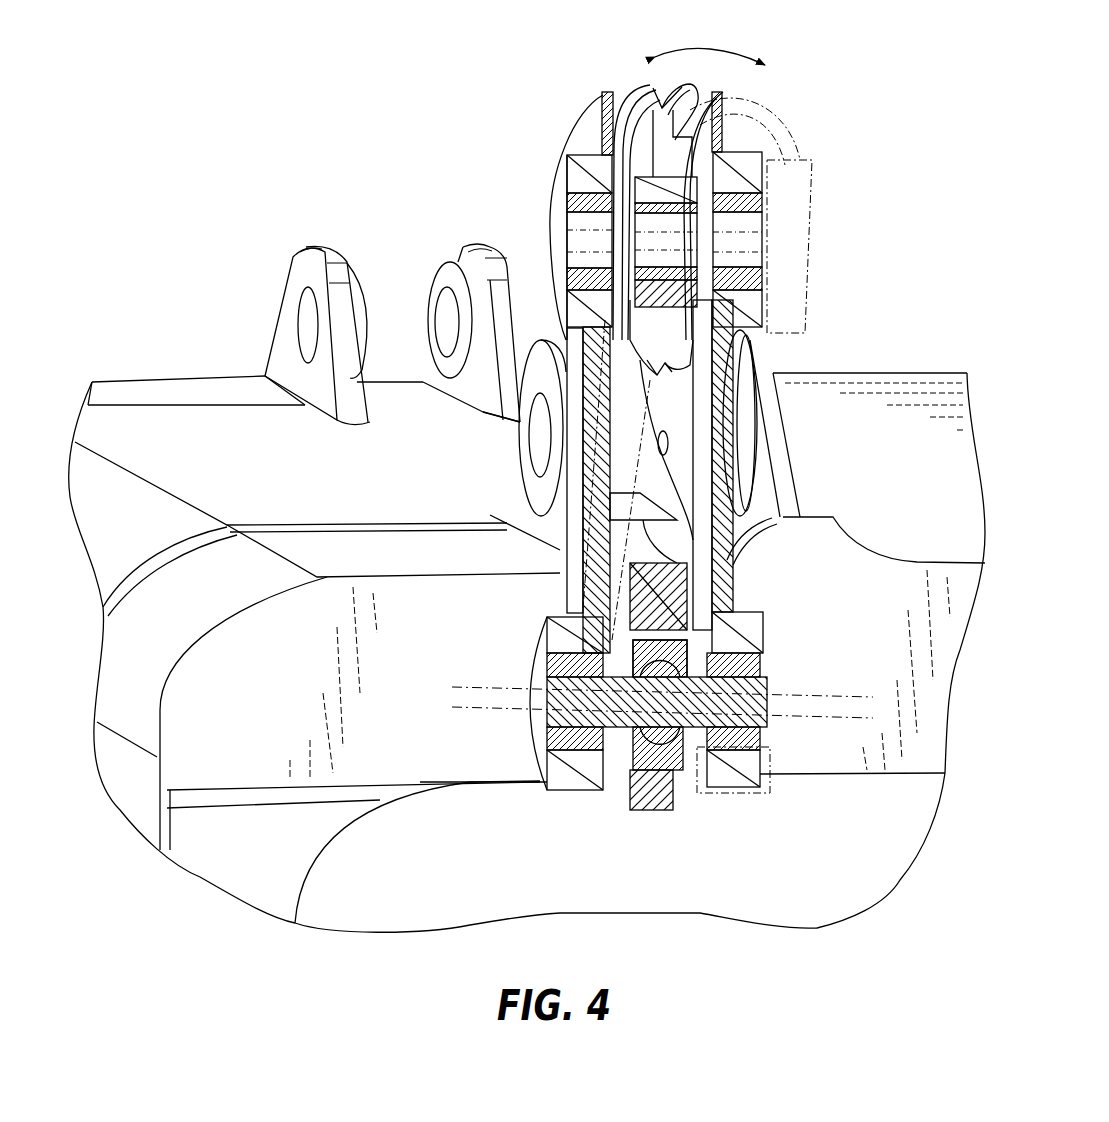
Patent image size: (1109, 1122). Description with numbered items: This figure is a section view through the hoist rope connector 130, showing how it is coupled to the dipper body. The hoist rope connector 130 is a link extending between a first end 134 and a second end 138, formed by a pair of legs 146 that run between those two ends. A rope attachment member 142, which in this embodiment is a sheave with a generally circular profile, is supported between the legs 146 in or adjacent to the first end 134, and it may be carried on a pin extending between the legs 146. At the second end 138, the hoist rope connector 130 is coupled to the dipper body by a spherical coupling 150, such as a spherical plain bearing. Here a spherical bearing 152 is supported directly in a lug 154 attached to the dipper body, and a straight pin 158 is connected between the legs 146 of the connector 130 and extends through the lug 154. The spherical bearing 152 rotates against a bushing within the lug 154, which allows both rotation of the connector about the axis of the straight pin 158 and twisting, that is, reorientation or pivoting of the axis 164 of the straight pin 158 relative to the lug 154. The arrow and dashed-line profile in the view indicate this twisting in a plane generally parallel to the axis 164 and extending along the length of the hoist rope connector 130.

The hoist rope connector 130 is at (528, 218).
The first end 134 is at (577, 182).
The second end 138 is at (567, 793).
The rope attachment member 142 is at (683, 150).
The legs 146 is at (613, 565).
The spherical coupling 150 is at (747, 787).
The spherical bearing 152 is at (667, 787).
The lug 154 is at (653, 813).
The straight pin 158 is at (540, 712).
The axis 164 is at (830, 697).